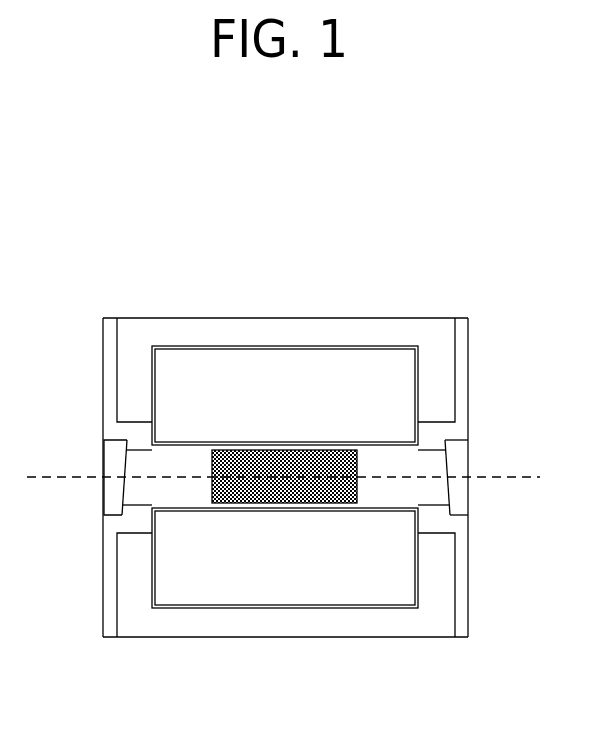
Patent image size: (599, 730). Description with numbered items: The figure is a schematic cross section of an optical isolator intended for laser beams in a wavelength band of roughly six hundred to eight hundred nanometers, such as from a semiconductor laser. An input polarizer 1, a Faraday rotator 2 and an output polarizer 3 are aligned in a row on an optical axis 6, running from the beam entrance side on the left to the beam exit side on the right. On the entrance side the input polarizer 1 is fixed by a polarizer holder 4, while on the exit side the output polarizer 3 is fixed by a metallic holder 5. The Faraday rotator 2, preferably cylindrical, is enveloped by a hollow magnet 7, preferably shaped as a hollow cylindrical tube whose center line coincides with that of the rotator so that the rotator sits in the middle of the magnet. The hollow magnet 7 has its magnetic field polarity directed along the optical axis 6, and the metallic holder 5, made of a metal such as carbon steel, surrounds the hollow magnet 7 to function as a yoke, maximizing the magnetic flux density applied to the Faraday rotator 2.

The input polarizer 1 is at (107, 473).
The Faraday rotator 2 is at (299, 472).
The output polarizer 3 is at (458, 467).
The polarizer holder 4 is at (107, 388).
The metallic holder 5 is at (381, 333).
The optical axis 6 is at (505, 478).
The hollow magnet 7 is at (228, 385).